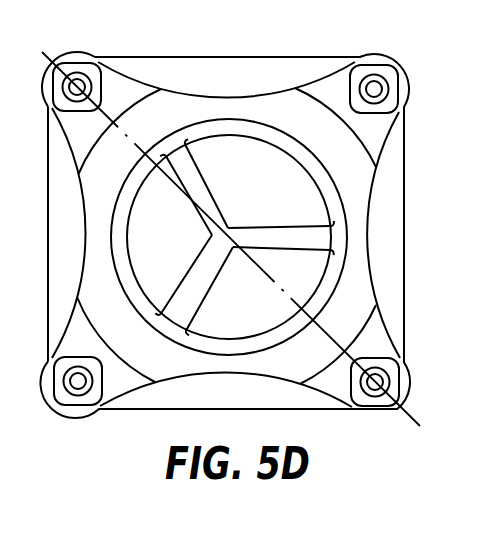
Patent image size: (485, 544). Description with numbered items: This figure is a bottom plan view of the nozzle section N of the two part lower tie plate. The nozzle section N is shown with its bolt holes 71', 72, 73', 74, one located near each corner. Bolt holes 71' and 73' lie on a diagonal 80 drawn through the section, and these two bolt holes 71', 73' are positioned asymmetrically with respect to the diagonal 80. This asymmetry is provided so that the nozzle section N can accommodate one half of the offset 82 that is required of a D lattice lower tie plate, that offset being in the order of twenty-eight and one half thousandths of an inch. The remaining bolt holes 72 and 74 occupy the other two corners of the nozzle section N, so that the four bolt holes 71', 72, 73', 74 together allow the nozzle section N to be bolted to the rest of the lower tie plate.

The bolt hole 71' is at (77, 62).
The bolt hole 72 is at (374, 75).
The bolt hole 73' is at (366, 408).
The bolt hole 74 is at (52, 406).
The diagonal 80 is at (56, 67).
The offset 82 is at (167, 233).
The nozzle section N is at (48, 213).